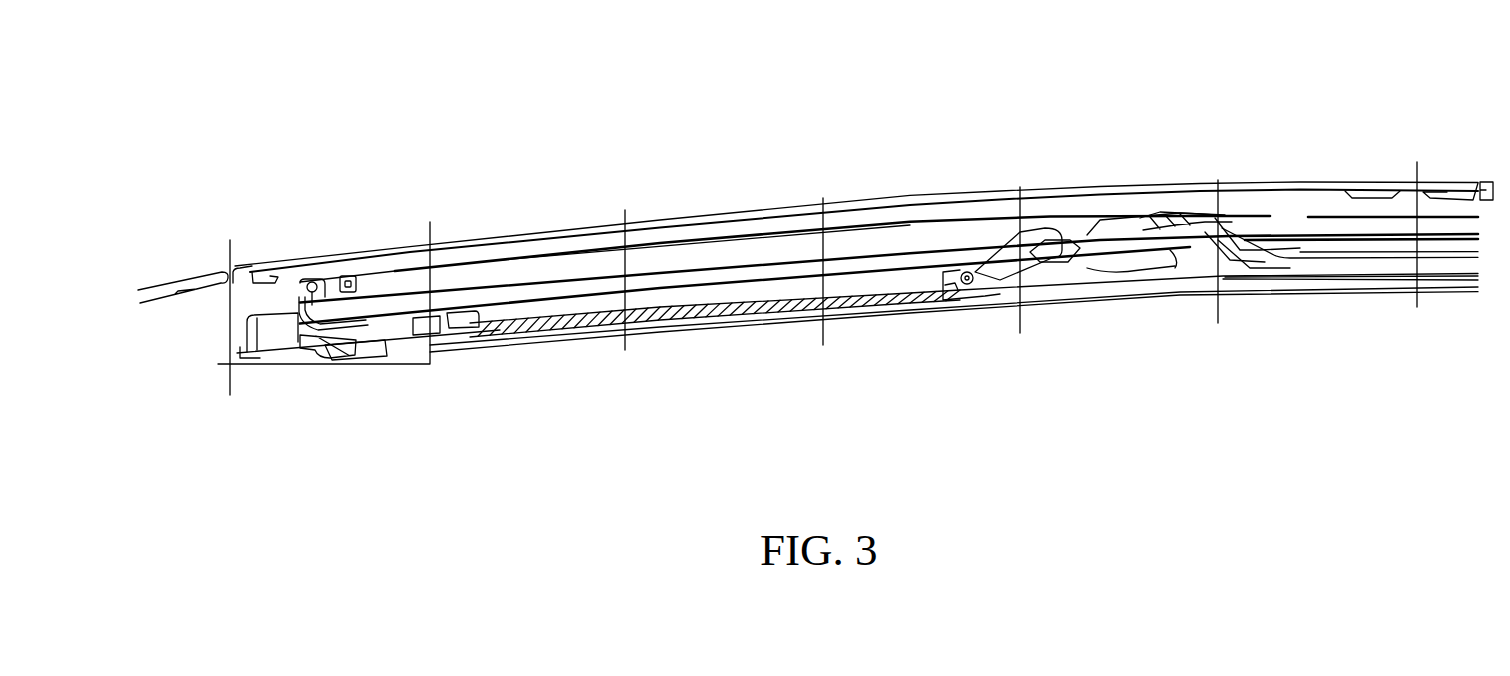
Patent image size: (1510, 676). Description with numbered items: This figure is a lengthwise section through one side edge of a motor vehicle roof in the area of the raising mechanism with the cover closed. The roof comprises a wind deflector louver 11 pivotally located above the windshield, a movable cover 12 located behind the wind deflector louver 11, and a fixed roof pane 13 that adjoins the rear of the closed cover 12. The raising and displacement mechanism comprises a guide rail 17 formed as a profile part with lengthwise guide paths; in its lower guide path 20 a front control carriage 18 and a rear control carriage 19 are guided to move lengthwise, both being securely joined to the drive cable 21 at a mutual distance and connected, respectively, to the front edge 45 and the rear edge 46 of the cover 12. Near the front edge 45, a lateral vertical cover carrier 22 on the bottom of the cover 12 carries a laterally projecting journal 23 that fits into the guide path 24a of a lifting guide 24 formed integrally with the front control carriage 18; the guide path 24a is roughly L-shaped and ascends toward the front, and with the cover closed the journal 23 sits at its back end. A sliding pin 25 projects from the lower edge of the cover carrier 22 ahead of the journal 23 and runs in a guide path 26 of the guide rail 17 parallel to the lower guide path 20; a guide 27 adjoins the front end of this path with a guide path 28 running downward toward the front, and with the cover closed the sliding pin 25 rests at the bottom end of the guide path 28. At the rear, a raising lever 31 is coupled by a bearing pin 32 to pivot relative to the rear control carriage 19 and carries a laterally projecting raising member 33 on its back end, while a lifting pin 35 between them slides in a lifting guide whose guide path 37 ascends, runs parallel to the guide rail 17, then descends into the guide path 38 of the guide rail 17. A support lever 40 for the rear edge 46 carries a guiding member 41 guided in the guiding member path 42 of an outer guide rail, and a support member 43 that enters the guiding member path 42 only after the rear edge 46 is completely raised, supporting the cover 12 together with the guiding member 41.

The wind deflector louver 11 is at (200, 270).
The cover 12 is at (762, 210).
The roof pane 13 is at (1483, 182).
The guide rail 17 is at (767, 312).
The front control carriage 18 is at (472, 330).
The rear control carriage 19 is at (953, 287).
The lower guide path 20 is at (685, 302).
The drive cable 21 is at (638, 320).
The cover carrier 22 is at (373, 282).
The journal 23 is at (437, 338).
The lifting guide 24 is at (305, 343).
The guide path 24a is at (320, 283).
The sliding pin 25 is at (355, 355).
The guide path 26 is at (548, 292).
The guide 27 is at (407, 345).
The guide path 28 is at (436, 266).
The raising lever 31 is at (1001, 240).
The bearing pin 32 is at (973, 290).
The raising member 33 is at (1150, 227).
The lifting pin 35 is at (1043, 267).
The guide path 37 is at (1265, 272).
The guide path 38 is at (1335, 270).
The support lever 40 is at (1117, 272).
The guiding member 41 is at (1265, 258).
The guiding member path 42 is at (1342, 230).
The support member 43 is at (1177, 263).
The front edge 45 is at (251, 260).
The rear edge 46 is at (1465, 170).